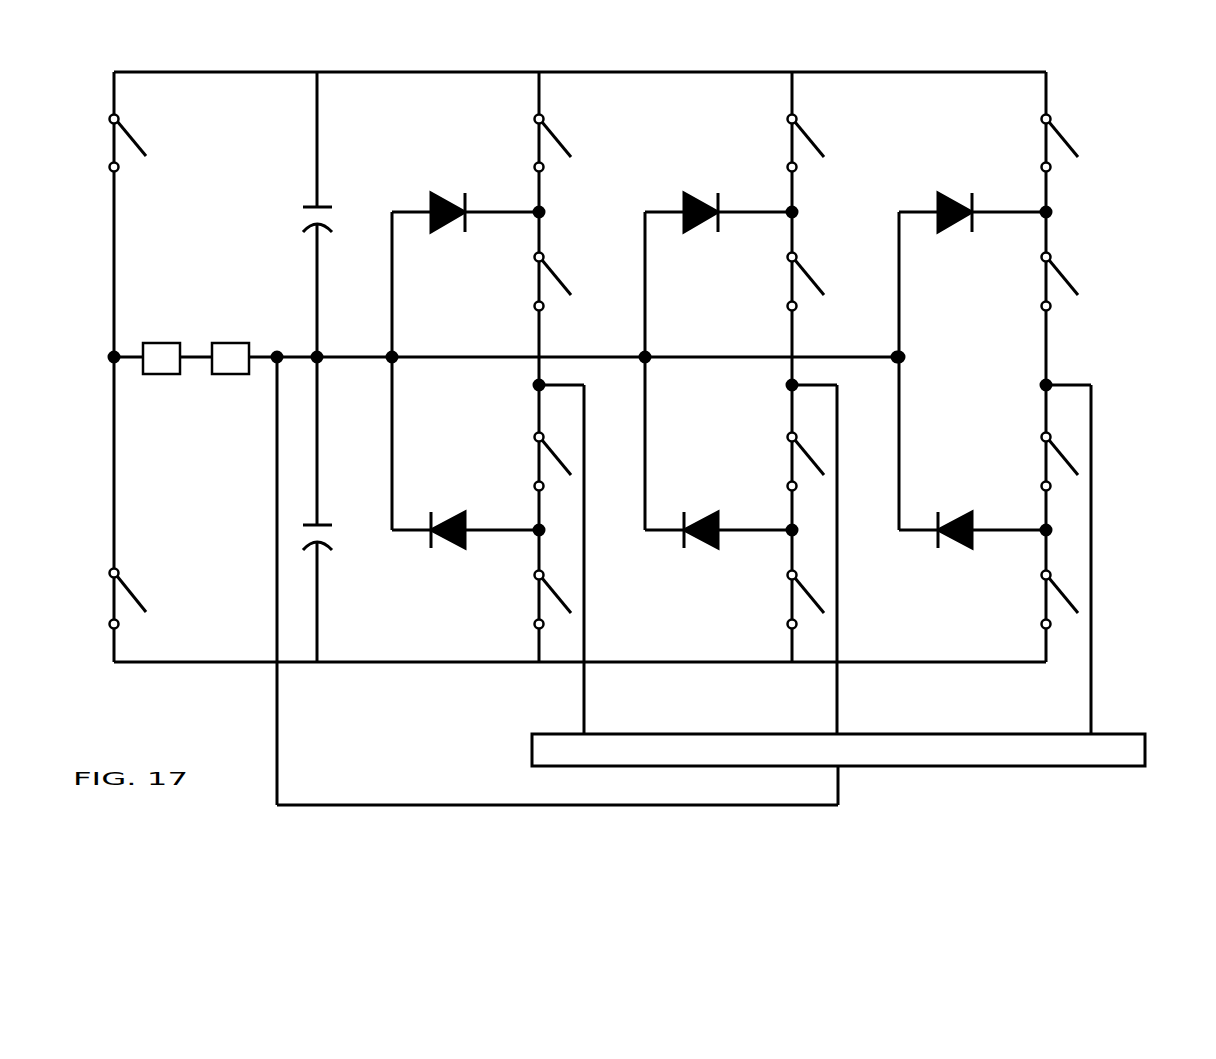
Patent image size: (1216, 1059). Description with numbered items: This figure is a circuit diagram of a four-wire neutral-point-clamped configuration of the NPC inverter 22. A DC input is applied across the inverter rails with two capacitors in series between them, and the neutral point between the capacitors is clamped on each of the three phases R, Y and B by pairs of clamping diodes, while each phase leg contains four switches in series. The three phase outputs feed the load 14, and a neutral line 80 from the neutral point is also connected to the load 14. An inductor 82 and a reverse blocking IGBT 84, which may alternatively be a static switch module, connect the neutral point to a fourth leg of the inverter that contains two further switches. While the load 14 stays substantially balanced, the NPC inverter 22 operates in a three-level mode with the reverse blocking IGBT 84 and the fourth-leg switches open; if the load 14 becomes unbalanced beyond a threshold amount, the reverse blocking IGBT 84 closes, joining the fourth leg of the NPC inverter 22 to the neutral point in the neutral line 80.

The NPC inverter 22 is at (1128, 112).
The inductor 82 is at (162, 343).
The reverse blocking IGBT 84 is at (233, 343).
The neutral line 80 is at (277, 735).
The load 14 is at (1145, 747).